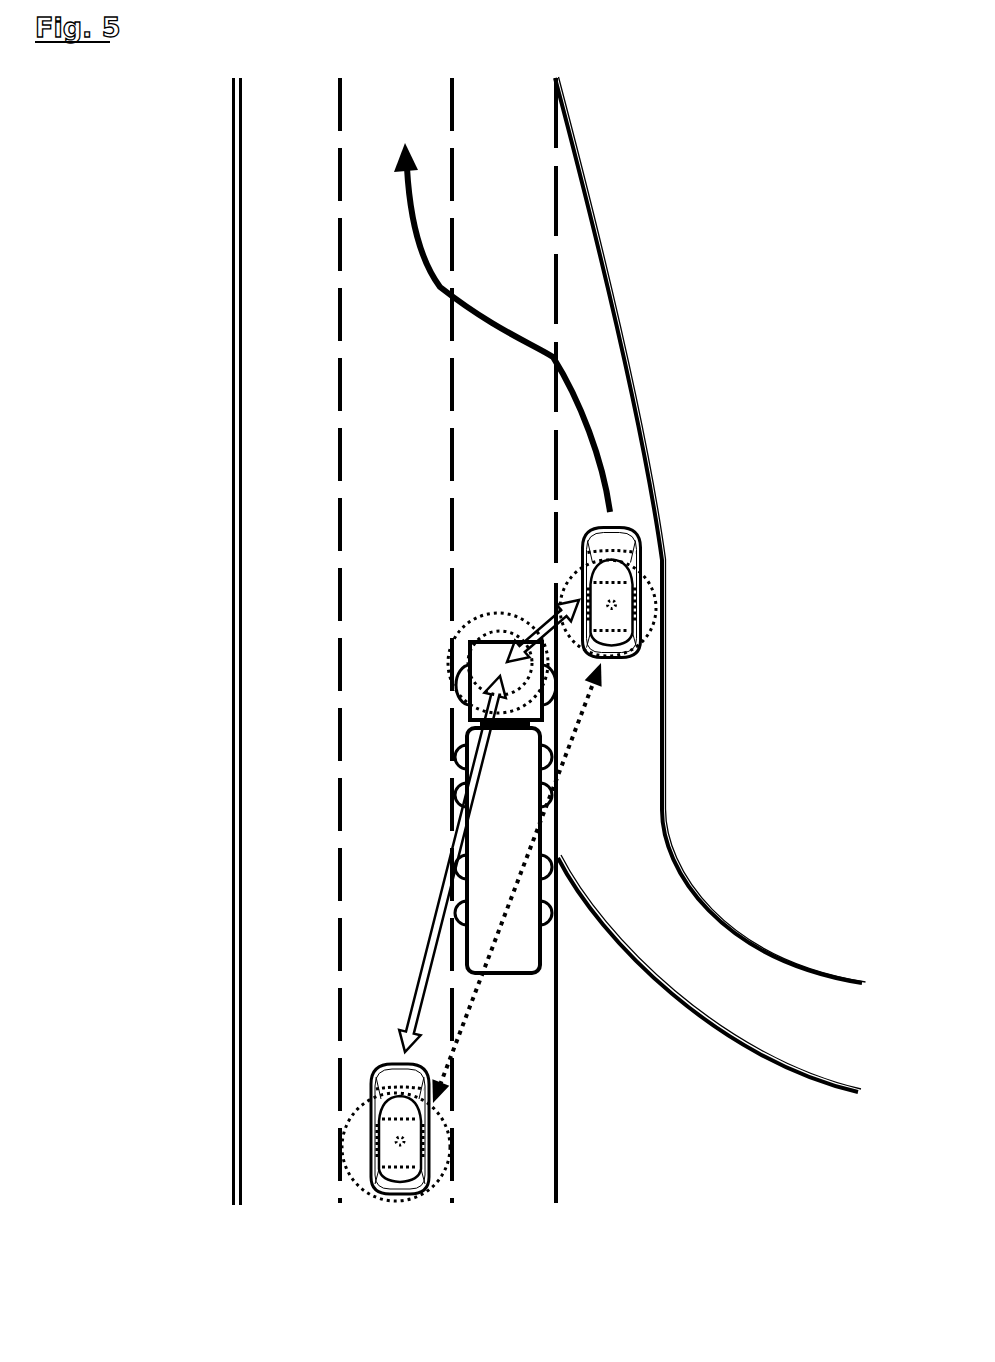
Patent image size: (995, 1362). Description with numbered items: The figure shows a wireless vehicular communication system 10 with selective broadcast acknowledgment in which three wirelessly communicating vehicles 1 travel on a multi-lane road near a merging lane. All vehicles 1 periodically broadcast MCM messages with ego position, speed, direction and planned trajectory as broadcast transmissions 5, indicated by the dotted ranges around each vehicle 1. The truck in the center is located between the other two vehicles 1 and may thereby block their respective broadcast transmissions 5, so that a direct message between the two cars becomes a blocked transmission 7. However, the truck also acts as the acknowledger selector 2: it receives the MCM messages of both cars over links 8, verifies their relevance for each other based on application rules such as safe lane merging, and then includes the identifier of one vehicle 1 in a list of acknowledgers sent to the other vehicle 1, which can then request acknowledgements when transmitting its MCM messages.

The wireless vehicular communication system 10 is at (152, 214).
The vehicle 1 is at (618, 550).
The acknowledger selector 2 is at (528, 773).
The broadcast transmission 5 is at (645, 650).
The blocked transmission 7 is at (588, 693).
The communication link / distance 8 is at (545, 613).